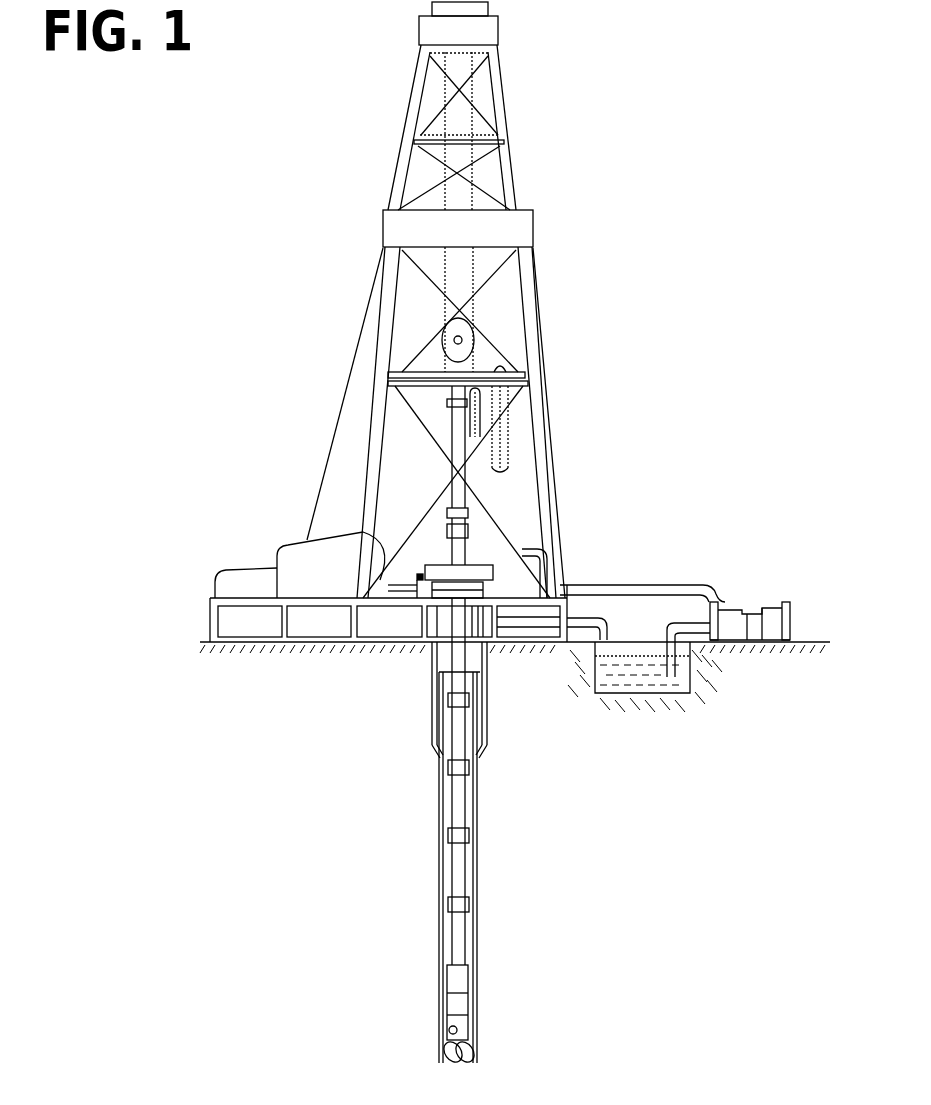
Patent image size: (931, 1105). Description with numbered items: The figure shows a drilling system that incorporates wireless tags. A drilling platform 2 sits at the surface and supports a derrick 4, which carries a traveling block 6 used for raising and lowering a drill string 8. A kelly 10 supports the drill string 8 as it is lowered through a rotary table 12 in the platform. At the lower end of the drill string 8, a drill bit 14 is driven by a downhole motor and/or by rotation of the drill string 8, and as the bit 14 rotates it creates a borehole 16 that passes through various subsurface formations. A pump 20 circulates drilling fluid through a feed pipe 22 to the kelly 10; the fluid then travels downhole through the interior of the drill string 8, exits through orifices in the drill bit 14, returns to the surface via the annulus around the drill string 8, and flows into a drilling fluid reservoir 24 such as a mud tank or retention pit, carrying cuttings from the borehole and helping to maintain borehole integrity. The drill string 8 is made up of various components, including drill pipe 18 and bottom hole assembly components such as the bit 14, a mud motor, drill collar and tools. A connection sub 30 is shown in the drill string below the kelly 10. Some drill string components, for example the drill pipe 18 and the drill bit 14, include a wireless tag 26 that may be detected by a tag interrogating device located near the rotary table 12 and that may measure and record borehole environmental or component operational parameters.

The drilling platform 2 is at (207, 613).
The derrick 4 is at (508, 173).
The traveling block 6 is at (471, 336).
The drill string 8 is at (469, 810).
The kelly 10 is at (453, 432).
The rotary table 12 is at (482, 562).
The drill bit 14 is at (470, 1049).
The borehole 16 is at (474, 820).
The drill pipe 18 is at (457, 933).
The pump 20 is at (727, 607).
The feed pipe 22 is at (657, 585).
The drilling fluid reservoir 24 is at (612, 678).
The wireless tag 26 is at (447, 1030).
The drill string connection sub 30 is at (470, 512).